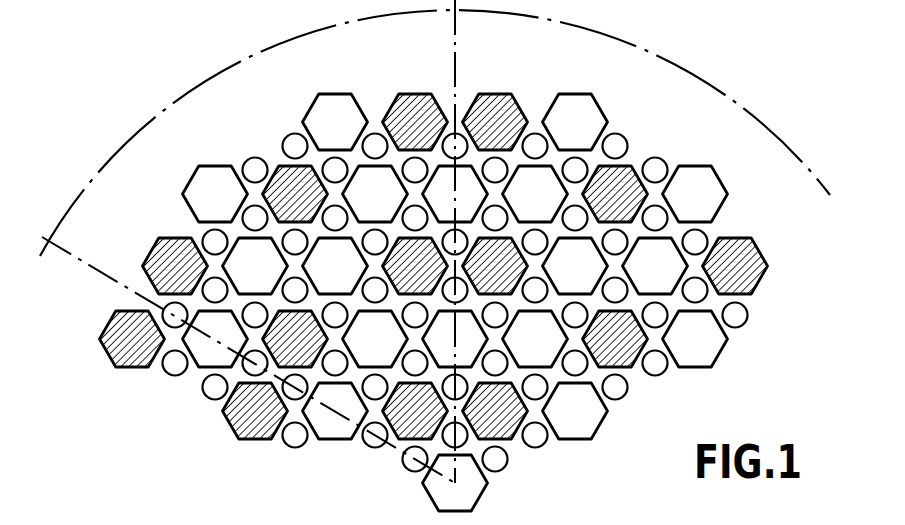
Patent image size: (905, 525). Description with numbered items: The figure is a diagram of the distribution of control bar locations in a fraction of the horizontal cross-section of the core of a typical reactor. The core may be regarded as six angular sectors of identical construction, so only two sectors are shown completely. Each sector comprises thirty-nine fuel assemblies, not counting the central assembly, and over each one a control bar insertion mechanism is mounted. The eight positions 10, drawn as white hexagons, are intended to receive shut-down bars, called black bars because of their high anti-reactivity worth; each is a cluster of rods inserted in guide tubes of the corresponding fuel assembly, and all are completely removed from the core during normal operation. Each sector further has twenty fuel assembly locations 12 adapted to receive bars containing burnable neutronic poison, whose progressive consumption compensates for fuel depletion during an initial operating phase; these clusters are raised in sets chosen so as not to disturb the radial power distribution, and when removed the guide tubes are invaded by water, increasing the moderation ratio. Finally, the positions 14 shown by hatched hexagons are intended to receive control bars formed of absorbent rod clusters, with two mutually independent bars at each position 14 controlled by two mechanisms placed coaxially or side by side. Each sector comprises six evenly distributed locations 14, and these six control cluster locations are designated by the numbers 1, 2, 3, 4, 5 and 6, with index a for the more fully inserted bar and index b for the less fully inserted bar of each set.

The control cluster location 1 is at (407, 422).
The control cluster location 2 is at (407, 277).
The control cluster location 3 is at (287, 350).
The control cluster location 4 is at (407, 133).
The control cluster location 5 is at (287, 205).
The control cluster location 6 is at (167, 277).
The shut-down bar position 10 is at (330, 127).
The fuel assembly location for burnable poison bars 12 is at (410, 213).
The control bar position 14 is at (228, 410).